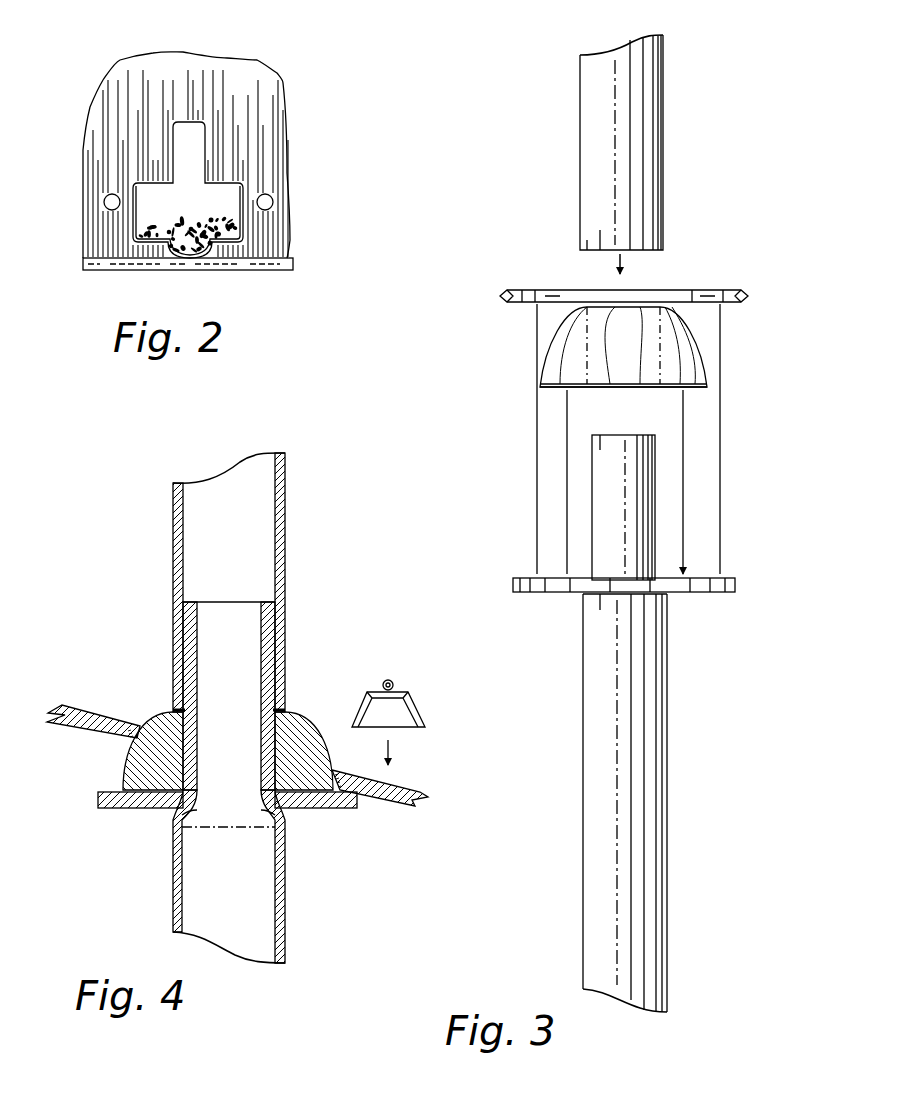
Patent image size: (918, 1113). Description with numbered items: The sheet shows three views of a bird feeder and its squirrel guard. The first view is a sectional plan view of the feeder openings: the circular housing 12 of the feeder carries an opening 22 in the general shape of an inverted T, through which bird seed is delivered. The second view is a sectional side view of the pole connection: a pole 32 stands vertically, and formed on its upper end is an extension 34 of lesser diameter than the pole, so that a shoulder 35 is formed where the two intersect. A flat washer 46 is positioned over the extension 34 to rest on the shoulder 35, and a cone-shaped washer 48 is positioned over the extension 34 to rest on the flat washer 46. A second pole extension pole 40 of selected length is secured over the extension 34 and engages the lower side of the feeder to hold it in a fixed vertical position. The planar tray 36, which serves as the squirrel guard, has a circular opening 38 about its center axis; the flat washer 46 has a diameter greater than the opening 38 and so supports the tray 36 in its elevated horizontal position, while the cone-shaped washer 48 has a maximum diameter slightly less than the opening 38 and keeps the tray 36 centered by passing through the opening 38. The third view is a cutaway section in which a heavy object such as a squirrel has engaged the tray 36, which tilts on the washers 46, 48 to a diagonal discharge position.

In FIG. 2, the circular housing 12 is at (263, 78).
In FIG. 2, the opening 22 is at (203, 207).
In FIG. 4, the pole 32 is at (287, 913).
In FIG. 3, the pole 32 is at (667, 745).
In FIG. 4, the extension 34 is at (246, 675).
In FIG. 3, the extension 34 is at (626, 515).
In FIG. 4, the shoulder 35 is at (283, 812).
In FIG. 3, the shoulder 35 is at (671, 597).
In FIG. 4, the planar tray 36 is at (397, 783).
In FIG. 3, the planar tray 36 is at (705, 292).
In FIG. 4, the circular opening 38 is at (338, 775).
In FIG. 3, the circular opening 38 is at (587, 293).
In FIG. 4, the second pole extension pole 40 is at (287, 505).
In FIG. 3, the second pole extension pole 40 is at (655, 127).
In FIG. 4, the flat washer 46 is at (98, 792).
In FIG. 3, the flat washer 46 is at (540, 597).
In FIG. 4, the cone-shaped washer 48 is at (300, 730).
In FIG. 3, the cone-shaped washer 48 is at (693, 340).